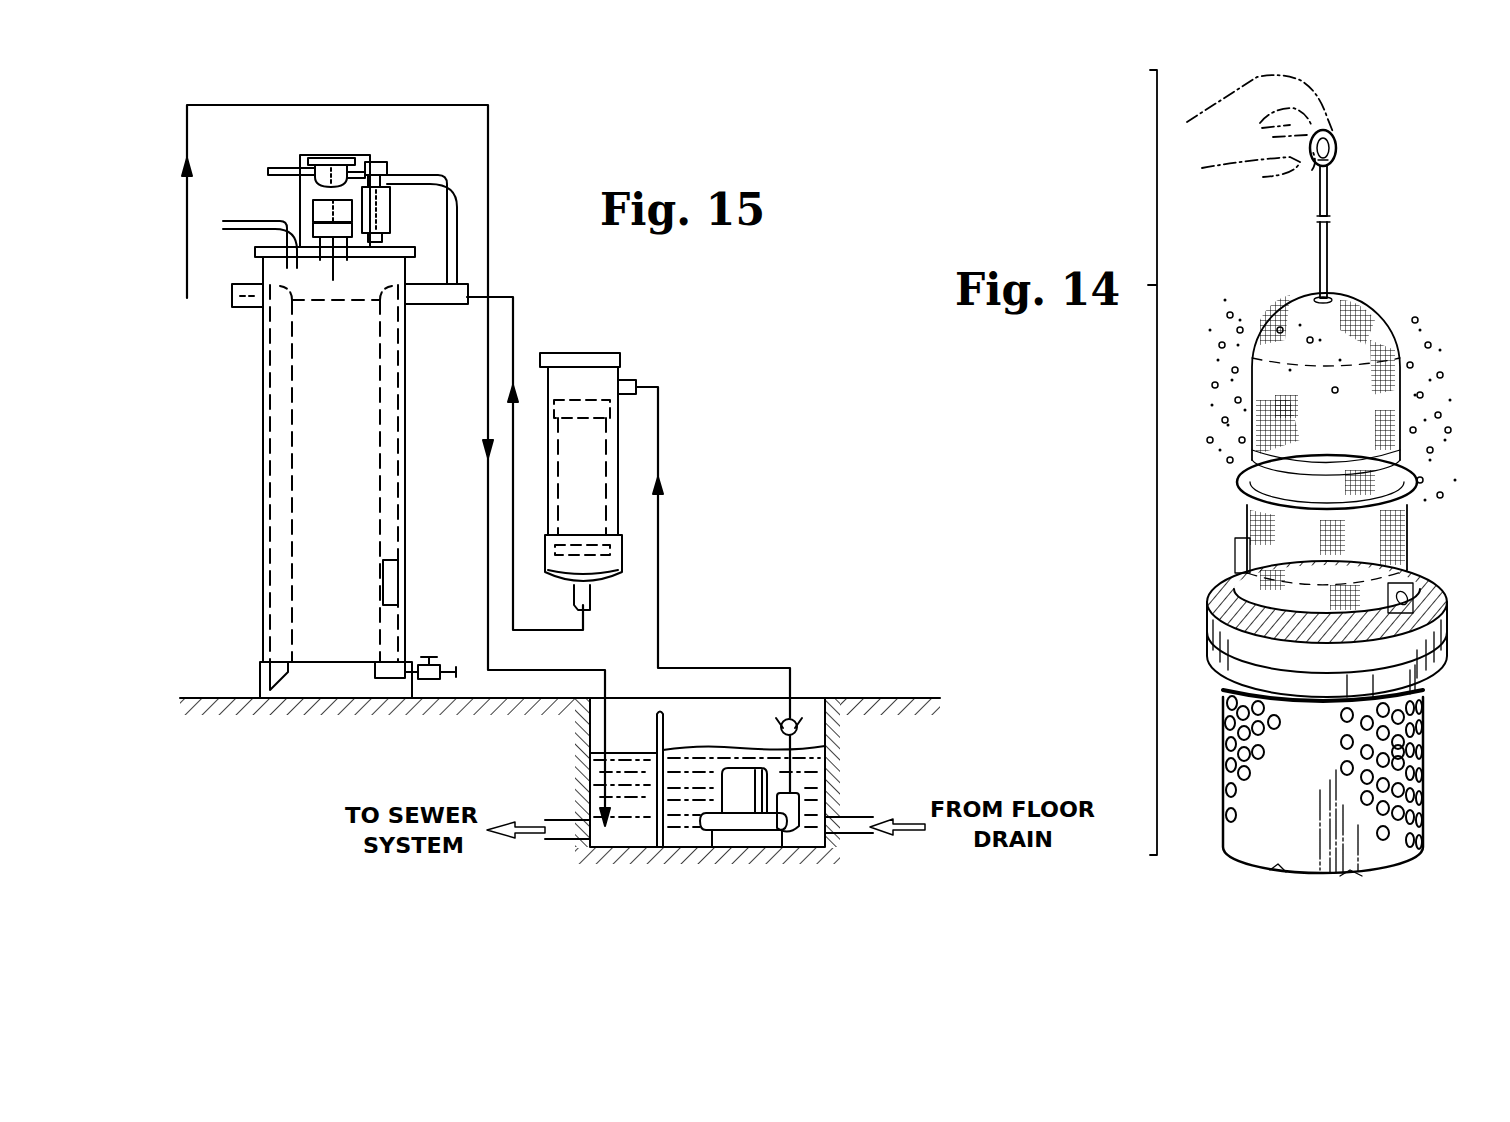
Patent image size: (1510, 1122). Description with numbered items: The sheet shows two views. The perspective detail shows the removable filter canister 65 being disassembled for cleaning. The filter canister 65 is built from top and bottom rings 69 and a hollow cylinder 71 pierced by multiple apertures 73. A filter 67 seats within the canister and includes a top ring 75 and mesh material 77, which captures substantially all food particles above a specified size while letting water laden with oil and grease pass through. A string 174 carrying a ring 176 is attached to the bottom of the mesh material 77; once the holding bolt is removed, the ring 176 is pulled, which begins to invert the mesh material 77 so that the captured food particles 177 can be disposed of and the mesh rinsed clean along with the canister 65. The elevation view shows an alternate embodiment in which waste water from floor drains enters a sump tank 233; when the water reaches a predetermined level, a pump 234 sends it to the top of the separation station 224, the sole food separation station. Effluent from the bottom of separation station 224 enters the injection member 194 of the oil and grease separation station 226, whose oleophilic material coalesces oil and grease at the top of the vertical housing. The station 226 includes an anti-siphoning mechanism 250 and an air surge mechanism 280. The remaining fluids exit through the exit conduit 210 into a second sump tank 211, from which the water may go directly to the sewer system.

In FIG. 14, the filter canister 65 is at (1432, 810).
In FIG. 14, the filter 67 is at (1412, 548).
In FIG. 14, the top and bottom rings 69 is at (1440, 652).
In FIG. 14, the hollow cylinder 71 is at (1415, 732).
In FIG. 14, the apertures 73 is at (1410, 772).
In FIG. 14, the top ring 75 is at (1405, 490).
In FIG. 14, the mesh material 77 is at (1370, 305).
In FIG. 14, the string 174 is at (1330, 257).
In FIG. 14, the ring 176 is at (1340, 150).
In FIG. 14, the food particles 177 is at (1450, 370).
In FIG. 15, the injection member 194 is at (397, 470).
In FIG. 15, the exit conduit 210 is at (250, 308).
In FIG. 15, the second sump tank 211 is at (632, 835).
In FIG. 15, the separation station 224 is at (582, 352).
In FIG. 15, the oil and grease separation station 226 is at (262, 400).
In FIG. 15, the sump tank 233 is at (712, 838).
In FIG. 15, the pump 234 is at (752, 815).
In FIG. 15, the anti-siphoning mechanism 250 is at (337, 160).
In FIG. 15, the air surge mechanism 280 is at (383, 210).